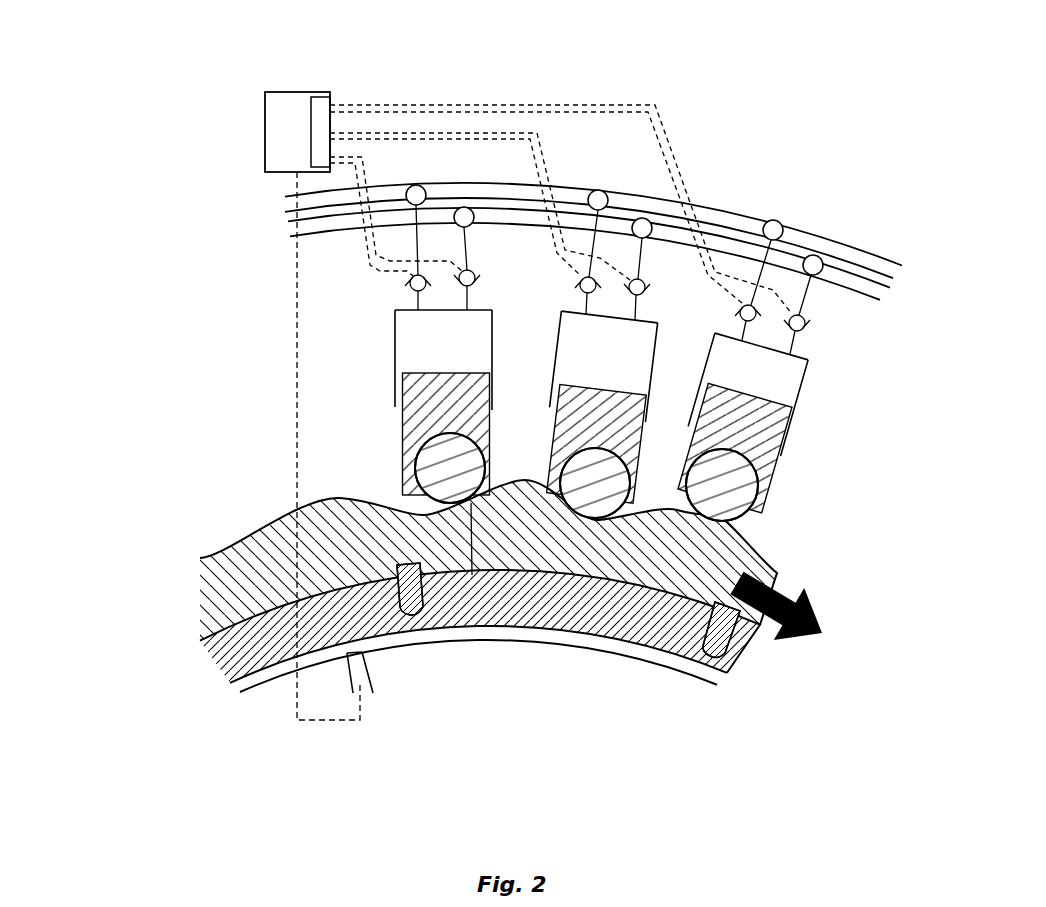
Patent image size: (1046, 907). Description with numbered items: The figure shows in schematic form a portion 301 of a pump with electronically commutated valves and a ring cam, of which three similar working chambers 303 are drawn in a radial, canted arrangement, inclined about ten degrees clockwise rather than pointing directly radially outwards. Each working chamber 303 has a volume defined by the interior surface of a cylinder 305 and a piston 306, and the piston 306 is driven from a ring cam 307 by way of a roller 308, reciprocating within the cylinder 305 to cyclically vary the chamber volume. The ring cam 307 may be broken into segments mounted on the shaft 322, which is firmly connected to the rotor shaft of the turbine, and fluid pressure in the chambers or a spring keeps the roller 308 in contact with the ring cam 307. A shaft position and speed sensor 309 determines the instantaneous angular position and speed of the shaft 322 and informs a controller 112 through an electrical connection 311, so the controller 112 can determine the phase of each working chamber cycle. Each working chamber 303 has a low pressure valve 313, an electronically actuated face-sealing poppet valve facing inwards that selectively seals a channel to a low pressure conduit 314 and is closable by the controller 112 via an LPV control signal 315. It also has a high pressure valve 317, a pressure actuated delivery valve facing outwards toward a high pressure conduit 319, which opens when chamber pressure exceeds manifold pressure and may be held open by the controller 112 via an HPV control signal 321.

The portion of the pump 301 is at (150, 88).
The controller 112 is at (297, 120).
The HPV control signal 321 is at (670, 140).
The LPV control signal 315 is at (677, 178).
The low pressure conduit 314 is at (797, 233).
The high pressure conduit 319 is at (832, 272).
The high pressure valve 317 is at (807, 323).
The low pressure valve 313 is at (750, 325).
The working chamber 303 is at (437, 346).
The cylinder 305 is at (395, 367).
The piston 306 is at (413, 422).
The roller 308 is at (447, 473).
The ring cam 307 is at (200, 597).
The shaft 322 is at (207, 670).
The shaft position and speed sensor 309 is at (373, 670).
The electrical connection 311 is at (328, 722).